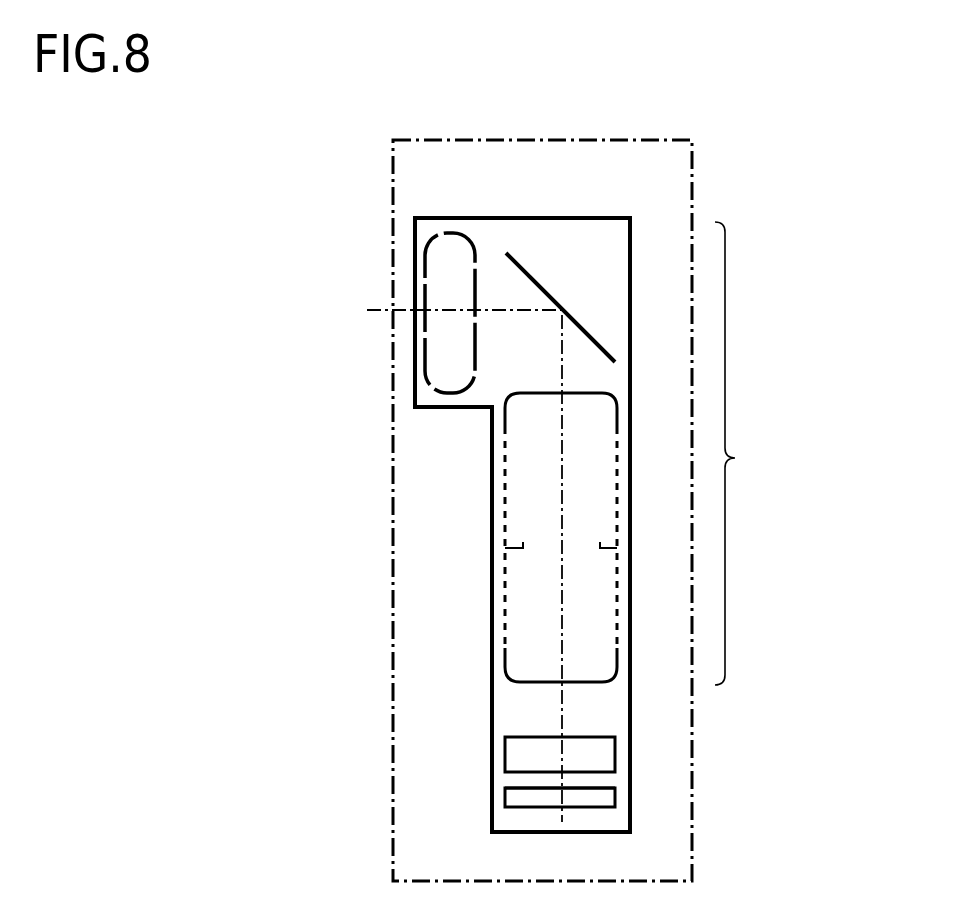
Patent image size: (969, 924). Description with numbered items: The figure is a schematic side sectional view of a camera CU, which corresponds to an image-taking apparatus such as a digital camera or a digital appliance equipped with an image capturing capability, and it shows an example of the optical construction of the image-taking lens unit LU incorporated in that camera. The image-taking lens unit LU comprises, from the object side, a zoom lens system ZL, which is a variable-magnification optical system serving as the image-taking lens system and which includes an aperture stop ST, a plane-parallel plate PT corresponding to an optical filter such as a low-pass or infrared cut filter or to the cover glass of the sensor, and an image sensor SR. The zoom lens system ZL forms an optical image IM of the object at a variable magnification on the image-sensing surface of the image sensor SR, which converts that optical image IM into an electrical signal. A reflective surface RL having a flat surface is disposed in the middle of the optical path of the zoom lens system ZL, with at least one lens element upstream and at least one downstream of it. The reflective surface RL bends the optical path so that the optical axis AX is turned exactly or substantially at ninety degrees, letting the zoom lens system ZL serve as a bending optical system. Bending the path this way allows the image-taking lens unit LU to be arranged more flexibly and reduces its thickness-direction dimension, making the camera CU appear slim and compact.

The camera CU is at (391, 843).
The image-taking lens unit LU is at (489, 758).
The reflective surface RL is at (517, 260).
The optical axis AX is at (380, 312).
The aperture stop ST is at (502, 548).
The zoom lens system ZL is at (748, 453).
The plane-parallel plate PT is at (619, 752).
The optical image IM is at (583, 788).
The image sensor SR is at (619, 793).